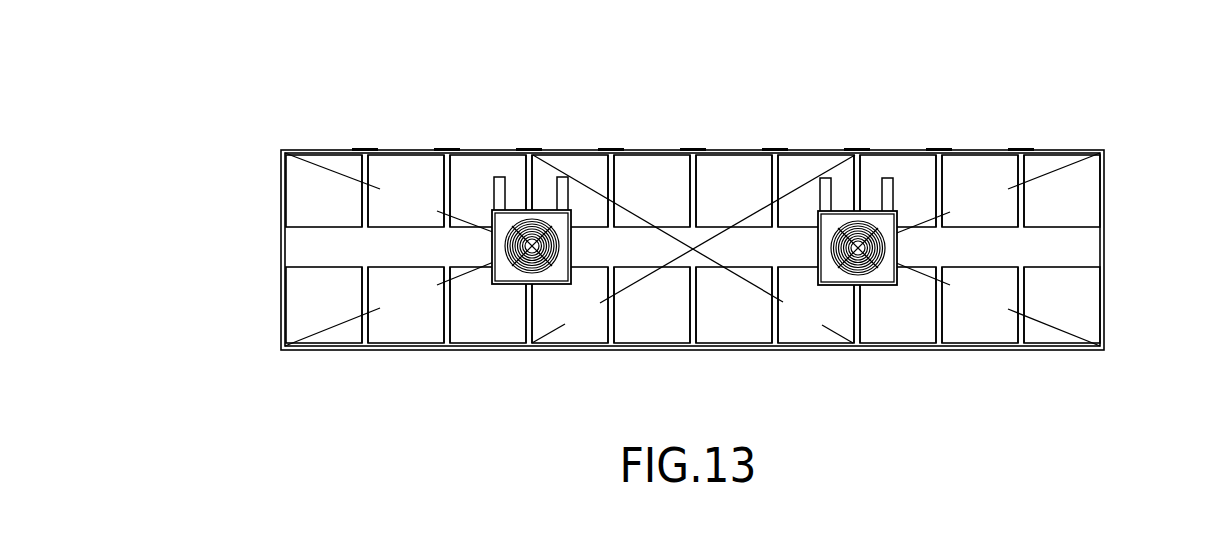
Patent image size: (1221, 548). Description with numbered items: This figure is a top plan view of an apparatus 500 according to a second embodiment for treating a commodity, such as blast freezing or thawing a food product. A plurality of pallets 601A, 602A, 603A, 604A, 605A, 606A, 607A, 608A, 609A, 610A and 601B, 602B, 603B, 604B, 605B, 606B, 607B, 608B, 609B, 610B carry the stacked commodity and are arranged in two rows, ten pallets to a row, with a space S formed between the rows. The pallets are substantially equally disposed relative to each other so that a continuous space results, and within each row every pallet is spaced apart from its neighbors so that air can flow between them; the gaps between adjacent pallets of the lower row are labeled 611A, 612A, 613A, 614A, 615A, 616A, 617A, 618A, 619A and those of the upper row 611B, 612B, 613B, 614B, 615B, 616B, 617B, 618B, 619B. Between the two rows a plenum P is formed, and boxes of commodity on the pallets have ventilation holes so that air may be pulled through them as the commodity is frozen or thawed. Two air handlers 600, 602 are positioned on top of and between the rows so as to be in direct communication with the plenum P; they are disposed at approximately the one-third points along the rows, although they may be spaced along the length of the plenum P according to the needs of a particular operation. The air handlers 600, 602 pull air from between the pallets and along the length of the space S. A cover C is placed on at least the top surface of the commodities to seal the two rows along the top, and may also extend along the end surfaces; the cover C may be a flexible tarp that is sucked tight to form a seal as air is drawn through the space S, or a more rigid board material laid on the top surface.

The apparatus 500 is at (704, 49).
The air handler 600 is at (492, 245).
The air handler 602 is at (818, 246).
The pallet 601A is at (297, 322).
The pallet 602A is at (379, 322).
The pallet 603A is at (461, 322).
The pallet 604A is at (543, 322).
The pallet 605A is at (625, 322).
The pallet 606A is at (707, 322).
The pallet 607A is at (785, 322).
The pallet 608A is at (869, 322).
The pallet 609A is at (953, 322).
The pallet 610A is at (1035, 322).
The pallet 601B is at (297, 205).
The pallet 602B is at (379, 205).
The pallet 603B is at (474, 174).
The pallet 604B is at (590, 174).
The pallet 605B is at (625, 205).
The pallet 606B is at (707, 205).
The pallet 607B is at (798, 174).
The pallet 608B is at (912, 174).
The pallet 609B is at (953, 205).
The pallet 610B is at (1035, 205).
The lower partition 611A is at (365, 350).
The lower partition 612A is at (447, 350).
The lower partition 613A is at (529, 350).
The lower partition 614A is at (611, 350).
The lower partition 615A is at (693, 350).
The lower partition 616A is at (775, 350).
The lower partition 617A is at (857, 350).
The lower partition 618A is at (939, 350).
The lower partition 619A is at (1021, 350).
The upper partition 611B is at (368, 148).
The upper partition 612B is at (450, 148).
The upper partition 613B is at (532, 148).
The upper partition 614B is at (614, 148).
The upper partition 615B is at (696, 148).
The upper partition 616B is at (778, 148).
The upper partition 617B is at (860, 148).
The upper partition 618B is at (942, 148).
The upper partition 619B is at (1024, 148).
The plenum P is at (391, 262).
The space S is at (305, 245).
The cover C is at (316, 349).